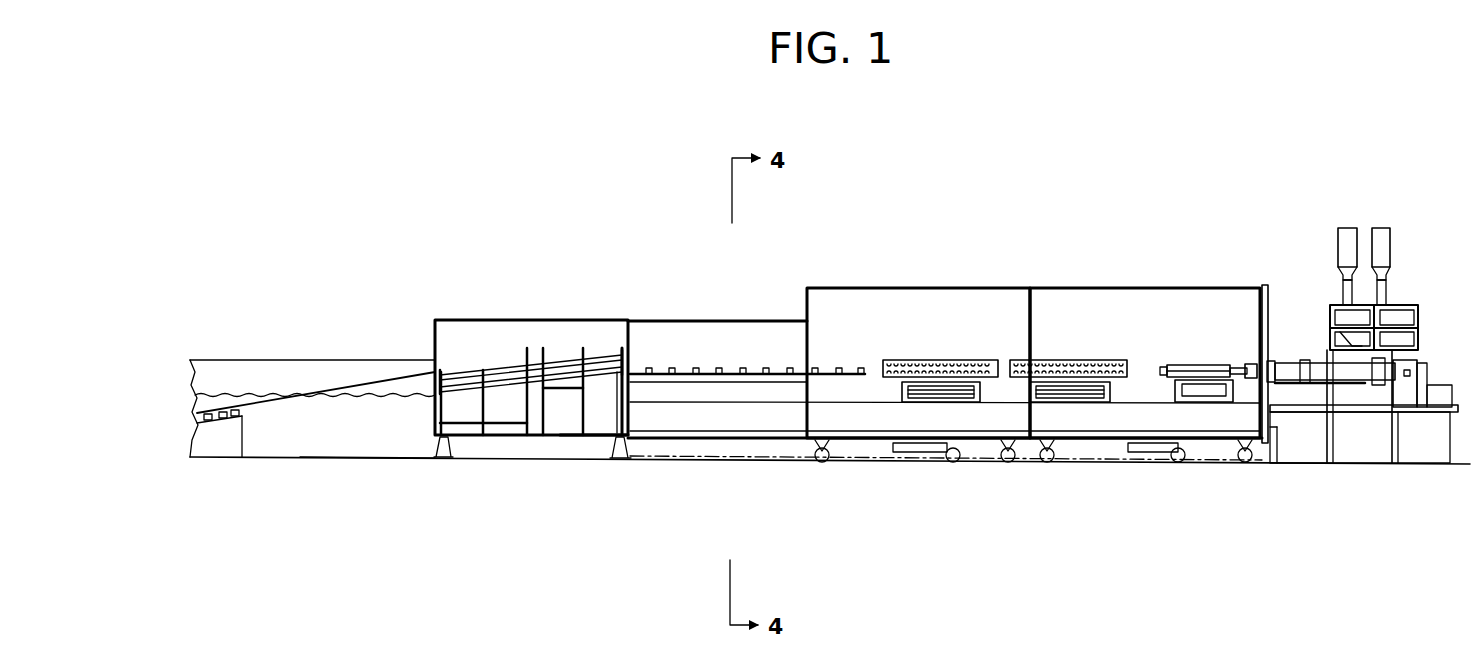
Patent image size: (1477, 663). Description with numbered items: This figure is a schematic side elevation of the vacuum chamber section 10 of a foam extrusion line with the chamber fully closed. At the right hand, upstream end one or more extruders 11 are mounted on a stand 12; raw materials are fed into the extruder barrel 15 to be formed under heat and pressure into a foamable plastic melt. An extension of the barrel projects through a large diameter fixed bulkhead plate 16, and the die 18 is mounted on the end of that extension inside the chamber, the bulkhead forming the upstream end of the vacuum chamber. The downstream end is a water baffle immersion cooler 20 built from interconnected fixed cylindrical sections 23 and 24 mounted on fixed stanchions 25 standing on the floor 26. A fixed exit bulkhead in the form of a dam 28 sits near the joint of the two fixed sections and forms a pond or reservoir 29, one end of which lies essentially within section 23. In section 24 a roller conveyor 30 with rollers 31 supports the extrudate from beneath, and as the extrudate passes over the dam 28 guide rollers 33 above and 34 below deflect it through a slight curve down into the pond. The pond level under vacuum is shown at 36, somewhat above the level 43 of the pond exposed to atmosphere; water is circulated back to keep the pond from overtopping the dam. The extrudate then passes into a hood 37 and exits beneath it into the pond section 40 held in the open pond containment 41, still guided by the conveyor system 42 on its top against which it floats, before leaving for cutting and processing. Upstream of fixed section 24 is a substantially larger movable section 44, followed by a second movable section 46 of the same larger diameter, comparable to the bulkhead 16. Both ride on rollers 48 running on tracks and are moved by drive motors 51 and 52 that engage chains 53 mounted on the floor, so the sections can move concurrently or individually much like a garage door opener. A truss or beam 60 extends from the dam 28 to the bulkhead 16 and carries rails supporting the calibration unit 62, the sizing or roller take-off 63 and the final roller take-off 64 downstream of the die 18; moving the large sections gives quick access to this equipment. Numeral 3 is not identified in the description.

The extruder 3 is at (1413, 252).
The vacuum chamber section 10 is at (1114, 238).
The extruders 11 is at (1437, 355).
The stand 12 is at (1413, 455).
The extruder barrel 15 is at (1285, 360).
The fixed bulkhead plate 16 is at (1268, 298).
The die 18 is at (1252, 358).
The water baffle immersion cooler 20 is at (362, 341).
The fixed cylindrical section 23 is at (598, 320).
The fixed cylindrical section 24 is at (725, 320).
The fixed stanchions 25 is at (637, 458).
The floor 26 is at (513, 458).
The fixed exit bulkhead (dam) 28 is at (592, 437).
The pond (reservoir) 29 is at (311, 434).
The roller conveyor 30 is at (683, 373).
The rollers 31 is at (745, 372).
The guide rollers (above extrudate) 33 is at (497, 390).
The guide rollers (below extrudate) 34 is at (500, 400).
The pond level under vacuum 36 is at (460, 368).
The hood 37 is at (417, 430).
The pond section exposed to atmosphere 40 is at (213, 407).
The open pond containment 41 is at (228, 362).
The conveyor system 42 is at (218, 425).
The pond level exposed to atmosphere 43 is at (268, 393).
The movable section 44 is at (872, 288).
The second movable section 46 is at (1190, 288).
The rollers 48 is at (820, 462).
The drive motor 51 is at (915, 452).
The drive motor 52 is at (1152, 452).
The chains 53 is at (720, 462).
The truss (beam) 60 is at (1113, 423).
The calibration unit 62 is at (1183, 358).
The sizing or roller take-off 63 is at (1092, 358).
The roller take-off 64 is at (967, 358).